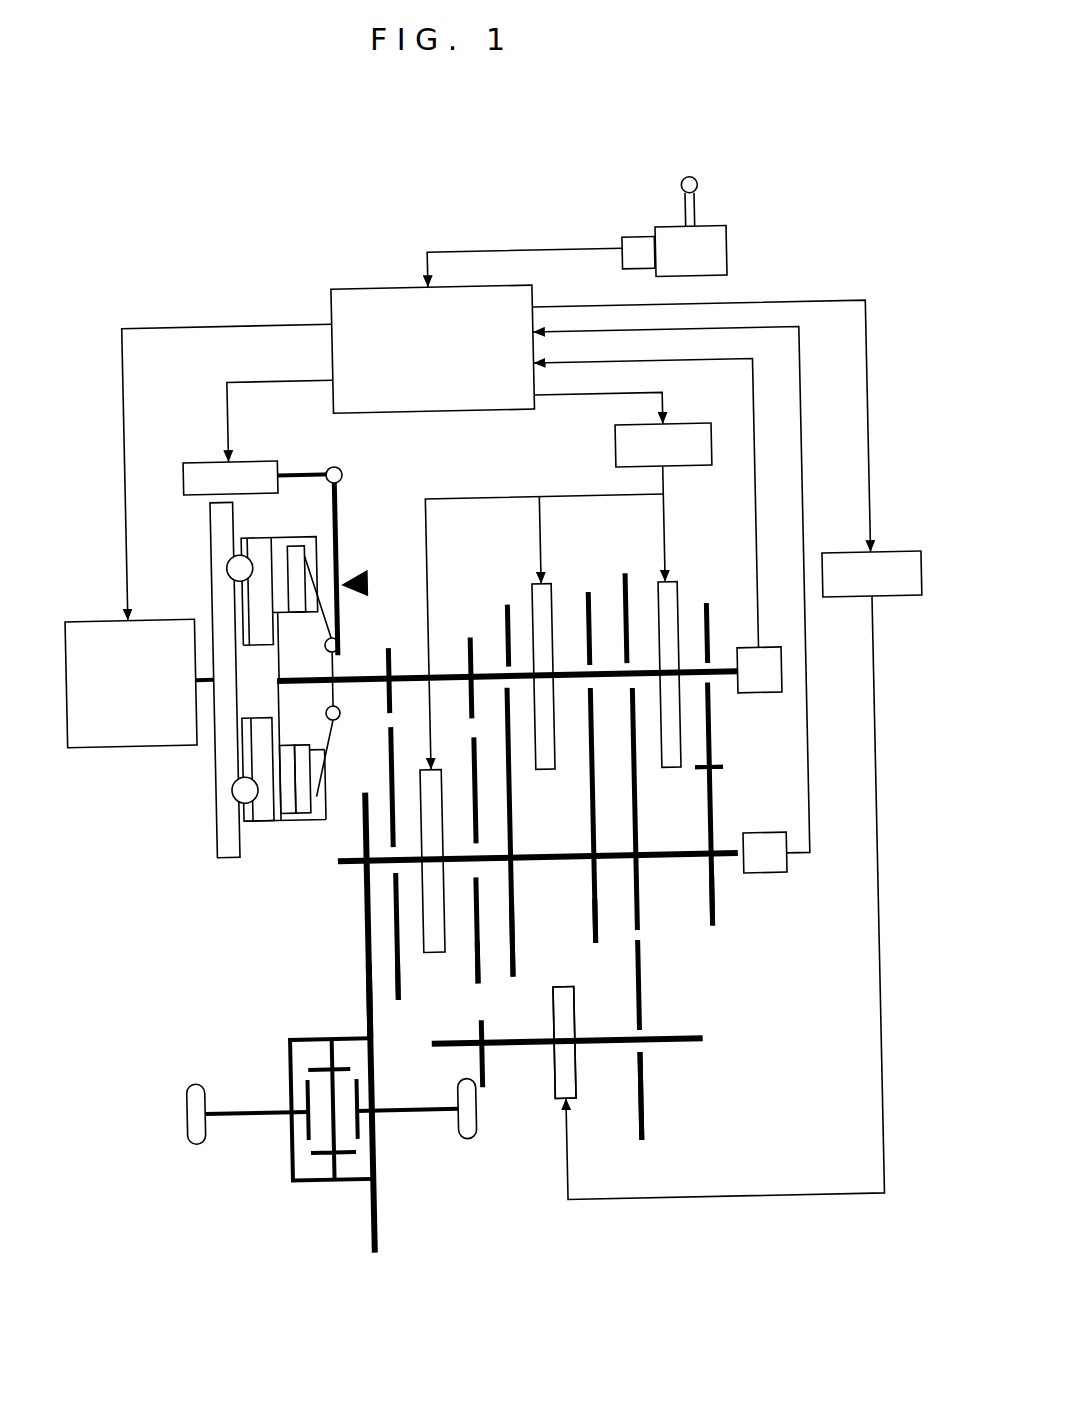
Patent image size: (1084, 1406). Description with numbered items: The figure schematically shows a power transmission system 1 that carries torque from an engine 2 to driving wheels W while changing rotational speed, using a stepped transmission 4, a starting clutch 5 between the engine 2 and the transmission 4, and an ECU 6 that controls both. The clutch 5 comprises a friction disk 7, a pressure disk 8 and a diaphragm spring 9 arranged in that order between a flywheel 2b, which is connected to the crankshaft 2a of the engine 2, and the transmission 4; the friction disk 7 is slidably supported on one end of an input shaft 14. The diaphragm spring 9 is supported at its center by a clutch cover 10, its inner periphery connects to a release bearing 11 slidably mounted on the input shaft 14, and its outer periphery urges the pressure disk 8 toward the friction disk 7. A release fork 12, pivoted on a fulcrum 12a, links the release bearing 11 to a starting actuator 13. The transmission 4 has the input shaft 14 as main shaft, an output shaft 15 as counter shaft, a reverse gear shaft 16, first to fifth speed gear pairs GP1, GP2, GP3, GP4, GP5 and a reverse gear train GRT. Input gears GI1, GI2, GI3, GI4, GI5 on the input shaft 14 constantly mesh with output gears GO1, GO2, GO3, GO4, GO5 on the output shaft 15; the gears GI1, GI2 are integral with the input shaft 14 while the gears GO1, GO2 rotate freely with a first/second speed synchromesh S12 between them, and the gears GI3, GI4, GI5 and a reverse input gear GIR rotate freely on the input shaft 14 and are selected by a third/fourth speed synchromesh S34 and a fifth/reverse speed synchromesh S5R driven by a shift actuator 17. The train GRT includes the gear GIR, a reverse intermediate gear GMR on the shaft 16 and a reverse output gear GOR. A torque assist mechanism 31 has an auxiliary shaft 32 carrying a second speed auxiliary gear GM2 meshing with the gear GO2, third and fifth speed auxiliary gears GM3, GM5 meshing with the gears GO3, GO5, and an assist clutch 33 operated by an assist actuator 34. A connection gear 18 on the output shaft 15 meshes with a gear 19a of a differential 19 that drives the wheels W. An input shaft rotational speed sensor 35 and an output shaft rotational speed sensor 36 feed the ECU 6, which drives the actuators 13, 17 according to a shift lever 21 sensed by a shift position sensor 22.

The power transmission system 1 is at (221, 263).
The engine 2 is at (99, 611).
The crankshaft 2a is at (206, 685).
The flywheel 2b is at (216, 516).
The stepped transmission 4 is at (545, 847).
The starting clutch 5 is at (260, 713).
The ECU 6 is at (364, 286).
The friction disk 7 is at (285, 795).
The pressure disk 8 is at (271, 579).
The diaphragm spring 9 is at (332, 786).
The clutch cover 10 is at (287, 535).
The release bearing 11 is at (340, 718).
The release fork 12 is at (350, 478).
The fulcrum 12a is at (365, 564).
The starting actuator 13 is at (213, 455).
The input shaft 14 is at (723, 669).
The output shaft 15 is at (714, 866).
The reverse gear shaft 16 is at (722, 772).
The shift actuator 17 is at (696, 428).
The connection gear 18 is at (361, 901).
The differential 19 is at (305, 1175).
The gear of differential 19a is at (359, 981).
The shift lever 21 is at (708, 211).
The shift position sensor 22 is at (647, 239).
The torque assist mechanism 31 is at (651, 1130).
The auxiliary shaft 32 is at (696, 1043).
The assist clutch 33 is at (569, 1081).
The assist actuator 34 is at (883, 560).
The input shaft rotational speed sensor 35 is at (766, 653).
The output shaft rotational speed sensor 36 is at (777, 880).
The driving wheels W is at (186, 1141).
The first speed input gear GI1 is at (391, 647).
The second speed input gear GI2 is at (473, 636).
The third speed input gear GI3 is at (512, 604).
The fourth speed input gear GI4 is at (592, 593).
The fifth speed input gear GI5 is at (629, 575).
The reverse input gear GIR is at (710, 607).
The first speed output gear GO1 is at (394, 927).
The second speed output gear GO2 is at (476, 827).
The third speed output gear GO3 is at (514, 885).
The fourth speed output gear GO4 is at (596, 788).
The fifth speed output gear GO5 is at (635, 832).
The reverse output gear GOR is at (710, 852).
The reverse intermediate gear GMR is at (712, 764).
The reverse gear train GRT is at (712, 929).
The first speed gear pair GP1 is at (392, 1000).
The second speed gear pair GP2 is at (485, 966).
The third speed gear pair GP3 is at (518, 907).
The fourth speed gear pair GP4 is at (593, 946).
The fifth speed gear pair GP5 is at (637, 899).
The second speed auxiliary gear GM2 is at (477, 1089).
The third speed auxiliary gear GM3 is at (546, 1097).
The fifth speed auxiliary gear GM5 is at (634, 1112).
The first/second speed synchromesh S12 is at (432, 951).
The third/fourth speed synchromesh S34 is at (554, 770).
The fifth/reverse speed synchromesh S5R is at (683, 603).